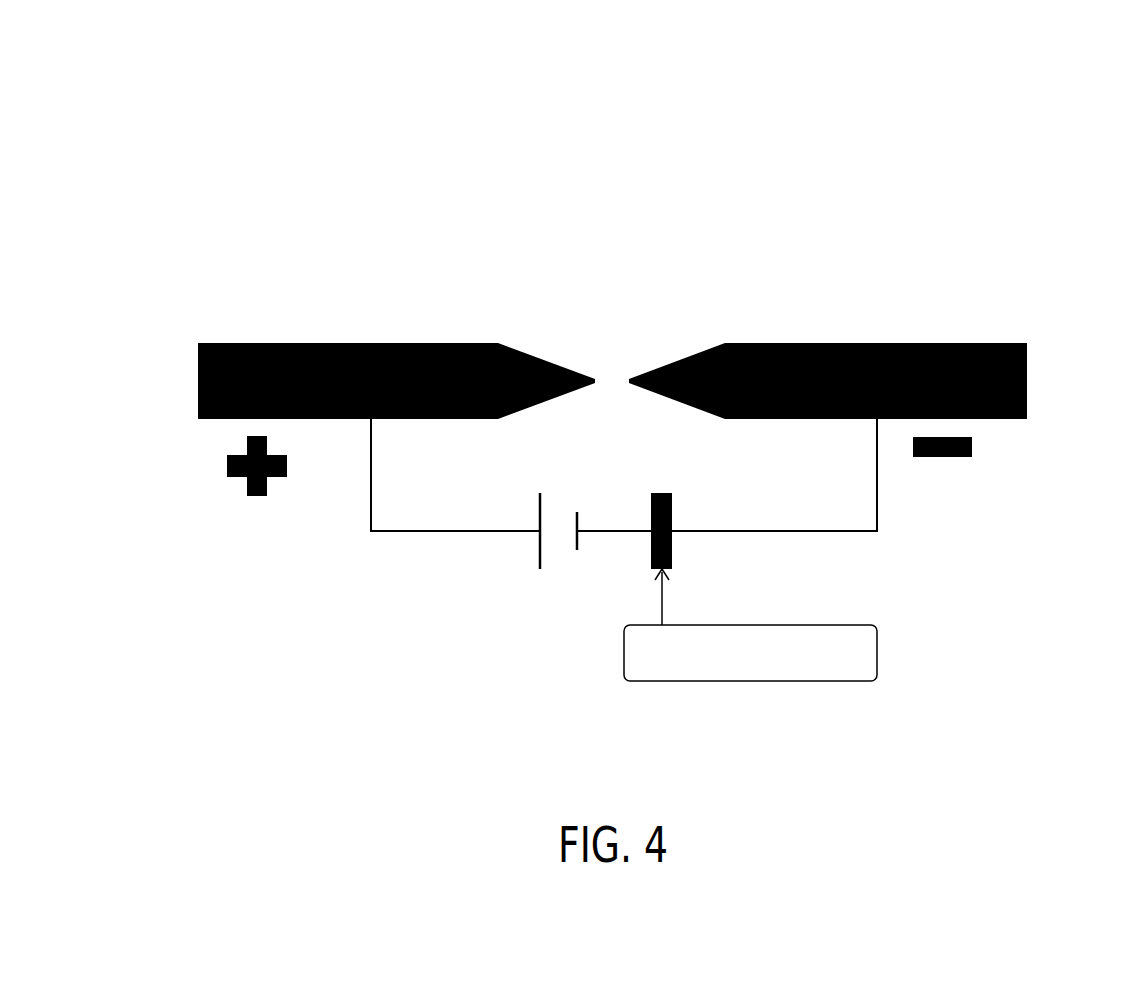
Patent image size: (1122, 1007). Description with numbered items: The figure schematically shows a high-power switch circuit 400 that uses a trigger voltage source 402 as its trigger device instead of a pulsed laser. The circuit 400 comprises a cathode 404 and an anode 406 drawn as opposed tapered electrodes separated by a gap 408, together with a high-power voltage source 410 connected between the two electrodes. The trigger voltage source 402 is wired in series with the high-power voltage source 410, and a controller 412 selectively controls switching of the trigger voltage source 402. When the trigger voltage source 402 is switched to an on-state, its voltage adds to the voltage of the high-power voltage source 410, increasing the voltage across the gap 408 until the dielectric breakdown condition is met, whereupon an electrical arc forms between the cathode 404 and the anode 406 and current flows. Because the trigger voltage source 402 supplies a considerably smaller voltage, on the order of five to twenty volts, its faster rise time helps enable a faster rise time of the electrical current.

The high-power switch circuit 400 is at (200, 102).
The trigger voltage source 402 is at (672, 550).
The cathode 404 is at (385, 343).
The anode 406 is at (840, 343).
The gap 408 is at (616, 372).
The high-power voltage source 410 is at (539, 552).
The controller 412 is at (750, 625).